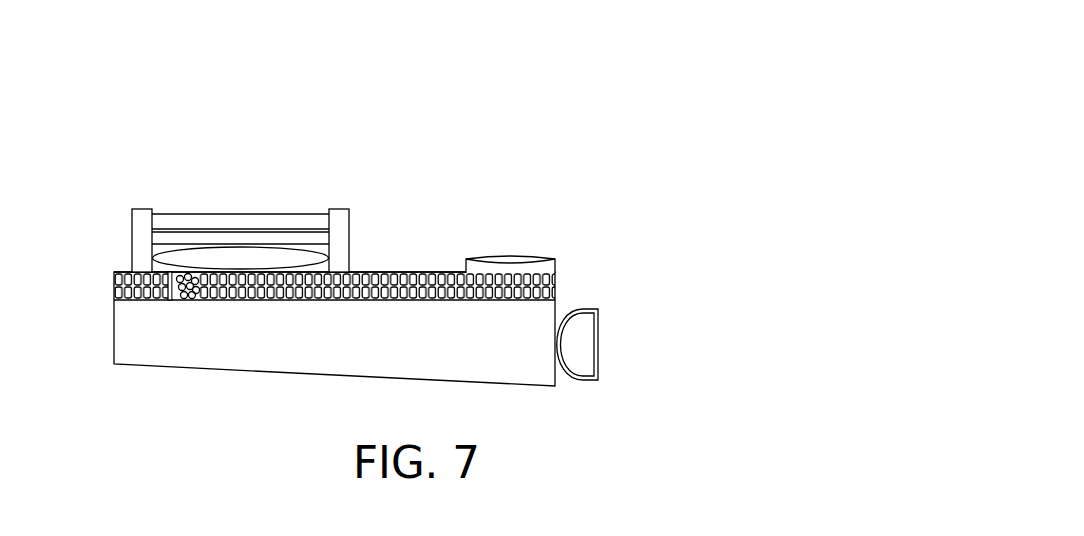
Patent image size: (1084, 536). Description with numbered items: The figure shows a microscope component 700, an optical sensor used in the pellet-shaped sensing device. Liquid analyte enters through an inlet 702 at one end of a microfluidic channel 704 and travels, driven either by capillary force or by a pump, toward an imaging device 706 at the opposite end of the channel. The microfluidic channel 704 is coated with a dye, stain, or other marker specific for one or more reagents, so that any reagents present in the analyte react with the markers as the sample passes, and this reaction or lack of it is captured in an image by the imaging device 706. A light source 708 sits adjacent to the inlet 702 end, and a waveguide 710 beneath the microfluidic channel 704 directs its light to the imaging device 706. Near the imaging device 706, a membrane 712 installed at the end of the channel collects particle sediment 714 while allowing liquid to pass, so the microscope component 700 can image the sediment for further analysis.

The microscope component 700 is at (138, 150).
The inlet 702 is at (518, 247).
The microfluidic channel 704 is at (756, 55).
The imaging device 706 is at (324, 185).
The light source 708 is at (607, 349).
The waveguide 710 is at (420, 343).
The membrane 712 is at (166, 303).
The particle sediment 714 is at (198, 303).